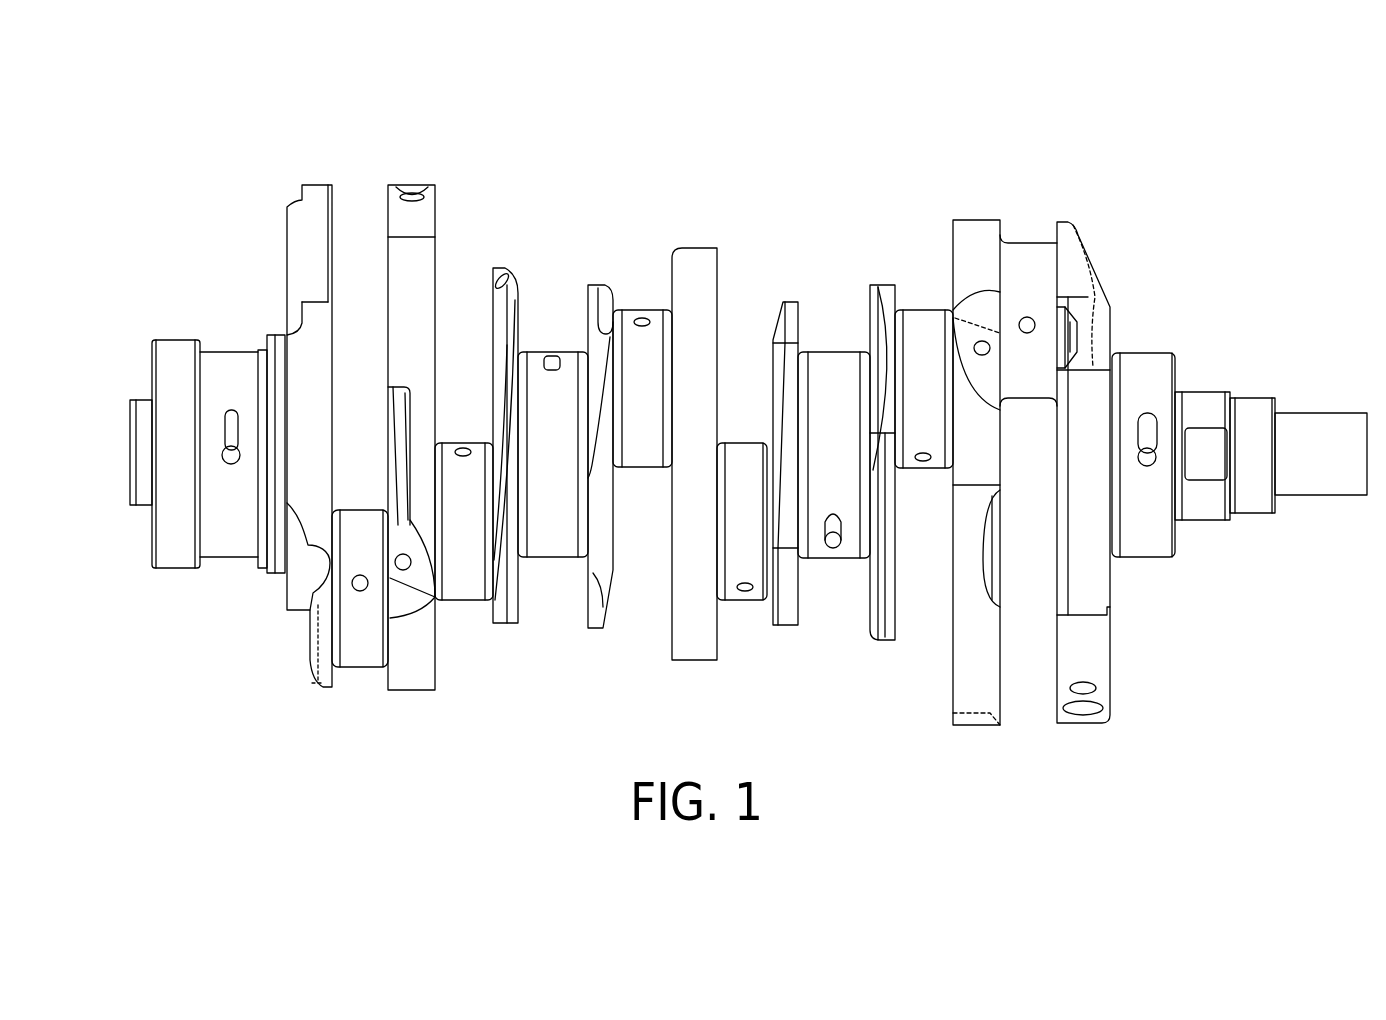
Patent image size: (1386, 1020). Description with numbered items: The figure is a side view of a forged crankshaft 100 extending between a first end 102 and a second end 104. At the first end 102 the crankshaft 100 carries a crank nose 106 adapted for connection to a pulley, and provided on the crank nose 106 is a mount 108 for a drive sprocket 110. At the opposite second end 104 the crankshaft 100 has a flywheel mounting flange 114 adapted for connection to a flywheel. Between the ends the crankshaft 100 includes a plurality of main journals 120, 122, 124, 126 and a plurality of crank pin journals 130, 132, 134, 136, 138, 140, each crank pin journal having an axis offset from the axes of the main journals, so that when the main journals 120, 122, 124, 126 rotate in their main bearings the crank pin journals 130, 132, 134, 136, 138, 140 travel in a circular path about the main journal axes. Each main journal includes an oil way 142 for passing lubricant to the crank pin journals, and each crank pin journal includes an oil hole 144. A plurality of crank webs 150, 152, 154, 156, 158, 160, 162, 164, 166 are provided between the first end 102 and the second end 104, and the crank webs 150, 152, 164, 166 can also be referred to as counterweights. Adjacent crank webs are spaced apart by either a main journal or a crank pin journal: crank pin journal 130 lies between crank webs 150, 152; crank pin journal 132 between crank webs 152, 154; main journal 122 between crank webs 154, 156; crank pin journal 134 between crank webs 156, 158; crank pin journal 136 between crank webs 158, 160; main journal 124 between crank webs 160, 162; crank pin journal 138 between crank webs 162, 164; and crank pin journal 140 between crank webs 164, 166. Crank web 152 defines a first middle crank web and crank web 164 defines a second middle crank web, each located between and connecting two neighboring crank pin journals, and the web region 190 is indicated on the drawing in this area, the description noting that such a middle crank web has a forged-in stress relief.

The forged crankshaft 100 is at (1232, 126).
The first end 102 is at (1317, 607).
The second end 104 is at (147, 687).
The crank nose 106 is at (1325, 428).
The mount 108 is at (1250, 410).
The drive sprocket 110 is at (1197, 510).
The flywheel mounting flange 114 is at (175, 350).
The main journal 120 is at (1155, 547).
The main journal 122 is at (833, 352).
The main journal 124 is at (549, 550).
The main journal 126 is at (236, 550).
The crank pin journal 130 is at (1030, 252).
The crank pin journal 132 is at (926, 335).
The crank pin journal 134 is at (745, 442).
The crank pin journal 136 is at (640, 462).
The crank pin journal 138 is at (467, 592).
The crank pin journal 140 is at (362, 657).
The oil way 142 is at (230, 465).
The oil hole 144 is at (360, 576).
The crank web 150 is at (1100, 660).
The crank web 152 is at (960, 697).
The crank web 154 is at (888, 642).
The crank web 156 is at (785, 615).
The crank web 158 is at (690, 652).
The crank web 160 is at (592, 285).
The crank web 162 is at (503, 280).
The crank web 164 is at (428, 213).
The crank web 166 is at (318, 196).
The web 190 is at (378, 436).